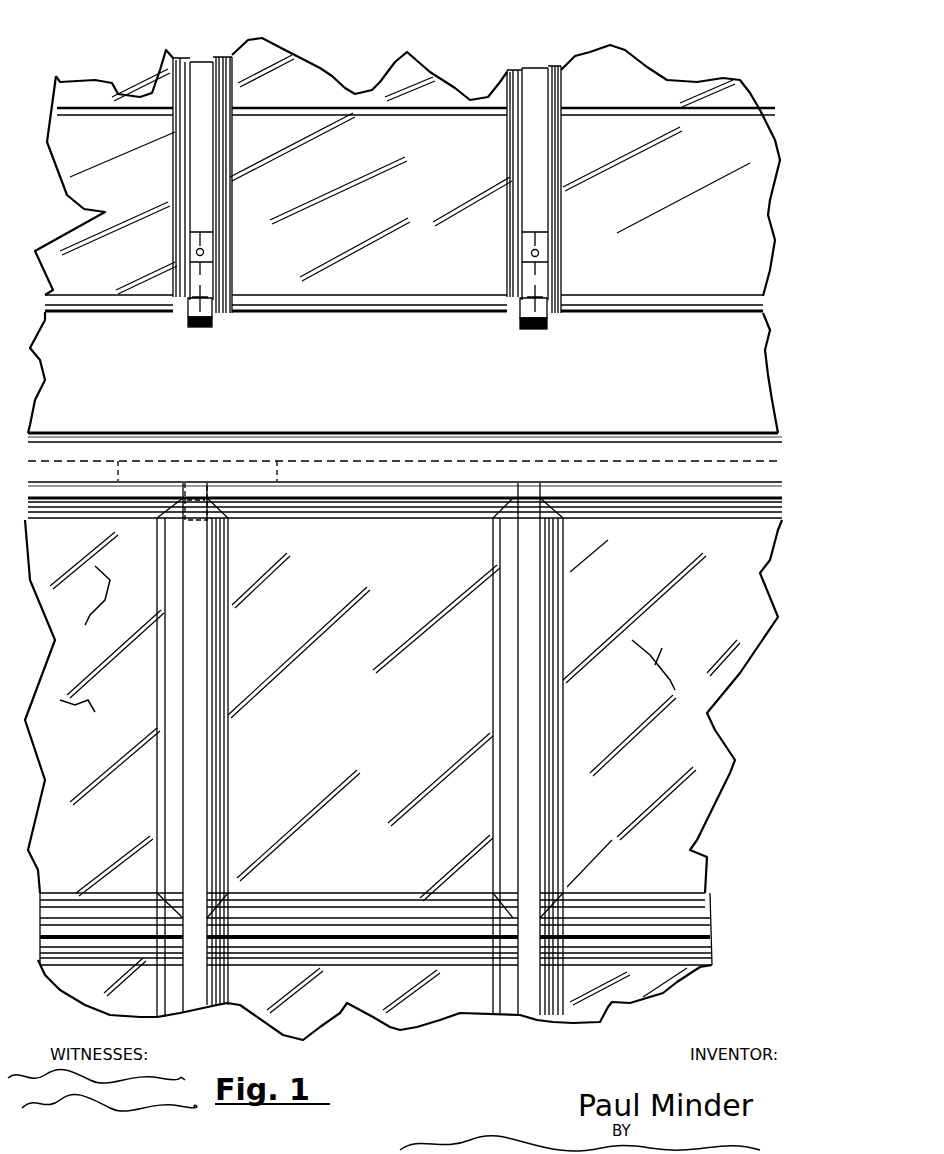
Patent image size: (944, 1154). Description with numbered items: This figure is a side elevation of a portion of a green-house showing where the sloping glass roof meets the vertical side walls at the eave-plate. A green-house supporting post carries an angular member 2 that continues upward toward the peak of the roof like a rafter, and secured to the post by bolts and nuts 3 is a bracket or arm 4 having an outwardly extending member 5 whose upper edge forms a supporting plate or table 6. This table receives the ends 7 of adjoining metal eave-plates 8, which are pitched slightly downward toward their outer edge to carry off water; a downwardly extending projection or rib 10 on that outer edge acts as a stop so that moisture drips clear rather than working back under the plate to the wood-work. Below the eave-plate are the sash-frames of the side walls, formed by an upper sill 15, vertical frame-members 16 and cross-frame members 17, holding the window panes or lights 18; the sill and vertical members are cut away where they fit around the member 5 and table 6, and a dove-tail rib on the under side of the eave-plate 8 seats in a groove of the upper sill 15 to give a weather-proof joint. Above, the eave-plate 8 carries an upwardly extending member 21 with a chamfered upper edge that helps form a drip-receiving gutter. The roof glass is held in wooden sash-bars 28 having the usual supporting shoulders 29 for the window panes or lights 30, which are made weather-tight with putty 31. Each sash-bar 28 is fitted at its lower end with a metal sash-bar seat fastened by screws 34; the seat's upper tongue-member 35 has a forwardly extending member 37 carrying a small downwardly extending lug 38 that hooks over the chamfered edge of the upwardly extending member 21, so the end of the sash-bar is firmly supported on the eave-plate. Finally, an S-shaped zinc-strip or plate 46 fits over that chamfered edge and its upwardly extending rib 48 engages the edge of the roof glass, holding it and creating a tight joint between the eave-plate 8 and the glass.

The angular member 2 is at (193, 1035).
The bolts and nuts 3 is at (531, 1040).
The bracket or arm 4 is at (590, 1045).
The outwardly extending member 5 is at (193, 517).
The supporting plate or table 6 is at (275, 472).
The ends of eave-plates 7 is at (187, 433).
The eave-plate 8 is at (119, 430).
The downwardly extending projection or rib 10 is at (87, 470).
The upper sill 15 is at (378, 490).
The vertical frame-members 16 is at (200, 728).
The cross-frame members 17 is at (357, 927).
The window panes or lights 18 is at (780, 560).
The upwardly extending member 21 is at (752, 348).
The sash-bars 28 is at (215, 60).
The supporting shoulders 29 is at (178, 165).
The window panes or lights 30 is at (155, 78).
The putty 31 is at (183, 188).
The screws 34 is at (204, 252).
The upper tongue-member 35 is at (198, 268).
The forwardly extending member 37 is at (207, 312).
The downwardly extending lug 38 is at (195, 323).
The zinc-strip or plate 46 is at (378, 315).
The upwardly extending rib 48 is at (390, 298).